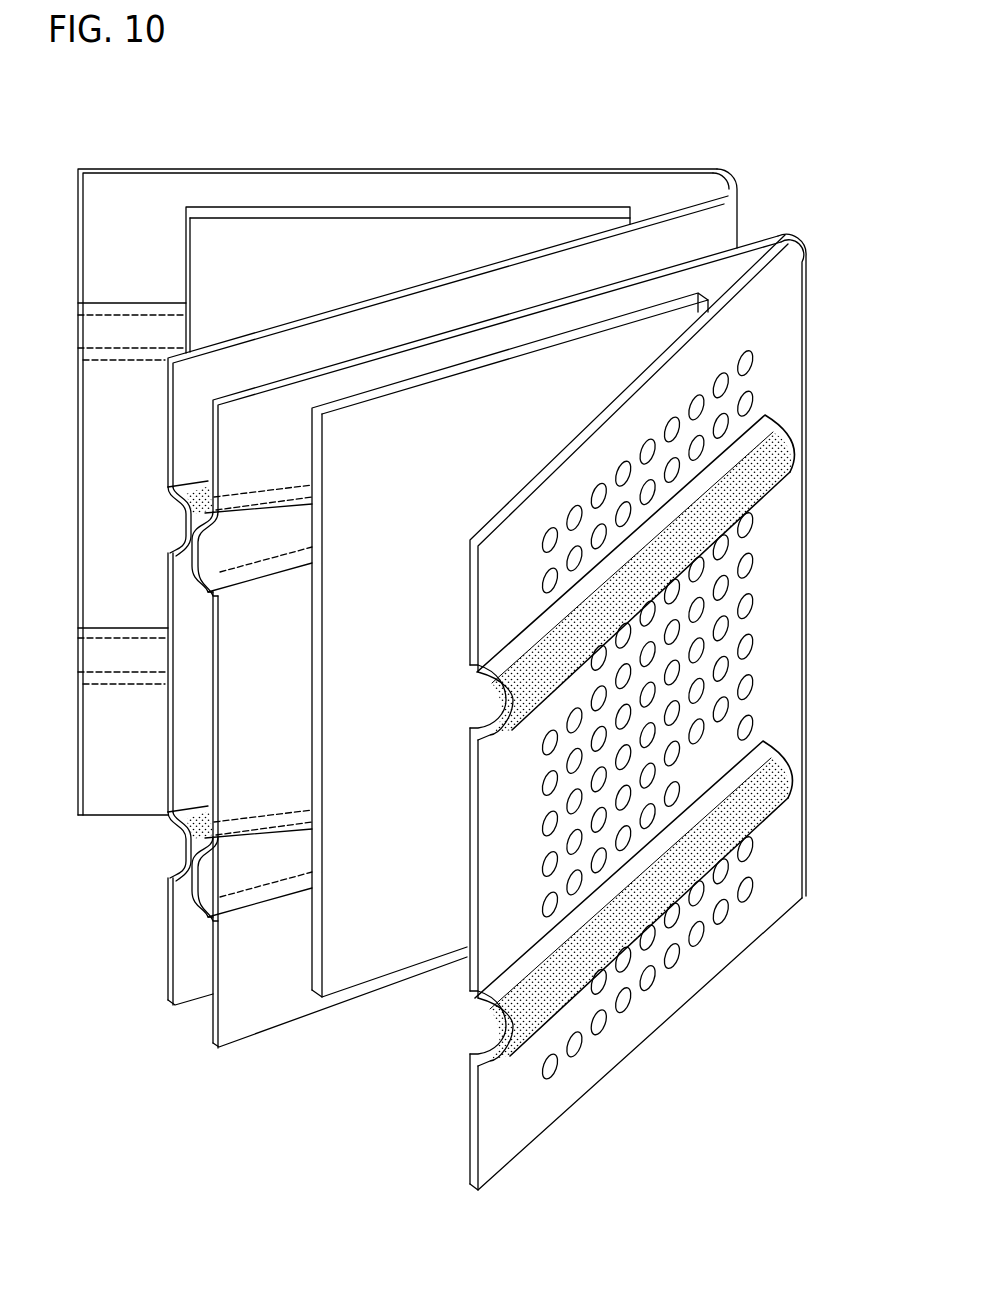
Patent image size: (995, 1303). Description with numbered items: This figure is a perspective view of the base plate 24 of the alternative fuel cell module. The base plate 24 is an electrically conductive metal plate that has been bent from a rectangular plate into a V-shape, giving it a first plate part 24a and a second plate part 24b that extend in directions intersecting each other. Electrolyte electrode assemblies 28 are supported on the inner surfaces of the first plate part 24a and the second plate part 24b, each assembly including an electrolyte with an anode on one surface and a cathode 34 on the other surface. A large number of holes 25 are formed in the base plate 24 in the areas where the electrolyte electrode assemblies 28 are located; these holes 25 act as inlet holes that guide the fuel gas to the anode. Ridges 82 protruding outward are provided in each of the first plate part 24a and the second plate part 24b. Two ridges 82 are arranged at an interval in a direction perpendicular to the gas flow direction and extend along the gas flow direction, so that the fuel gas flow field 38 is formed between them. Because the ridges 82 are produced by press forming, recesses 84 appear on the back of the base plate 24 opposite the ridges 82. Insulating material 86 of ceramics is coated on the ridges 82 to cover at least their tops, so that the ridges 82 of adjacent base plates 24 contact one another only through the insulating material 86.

The base plate 24 is at (410, 643).
The first plate part 24a is at (100, 492).
The second plate part 24b is at (408, 693).
The holes 25 is at (602, 1026).
The electrolyte electrode assembly 28 is at (447, 609).
The cathode 34 is at (261, 228).
The fuel gas flow field 38 is at (196, 703).
The ridges 82 is at (192, 482).
The recesses 84 is at (142, 333).
The insulating material 86 is at (125, 337).